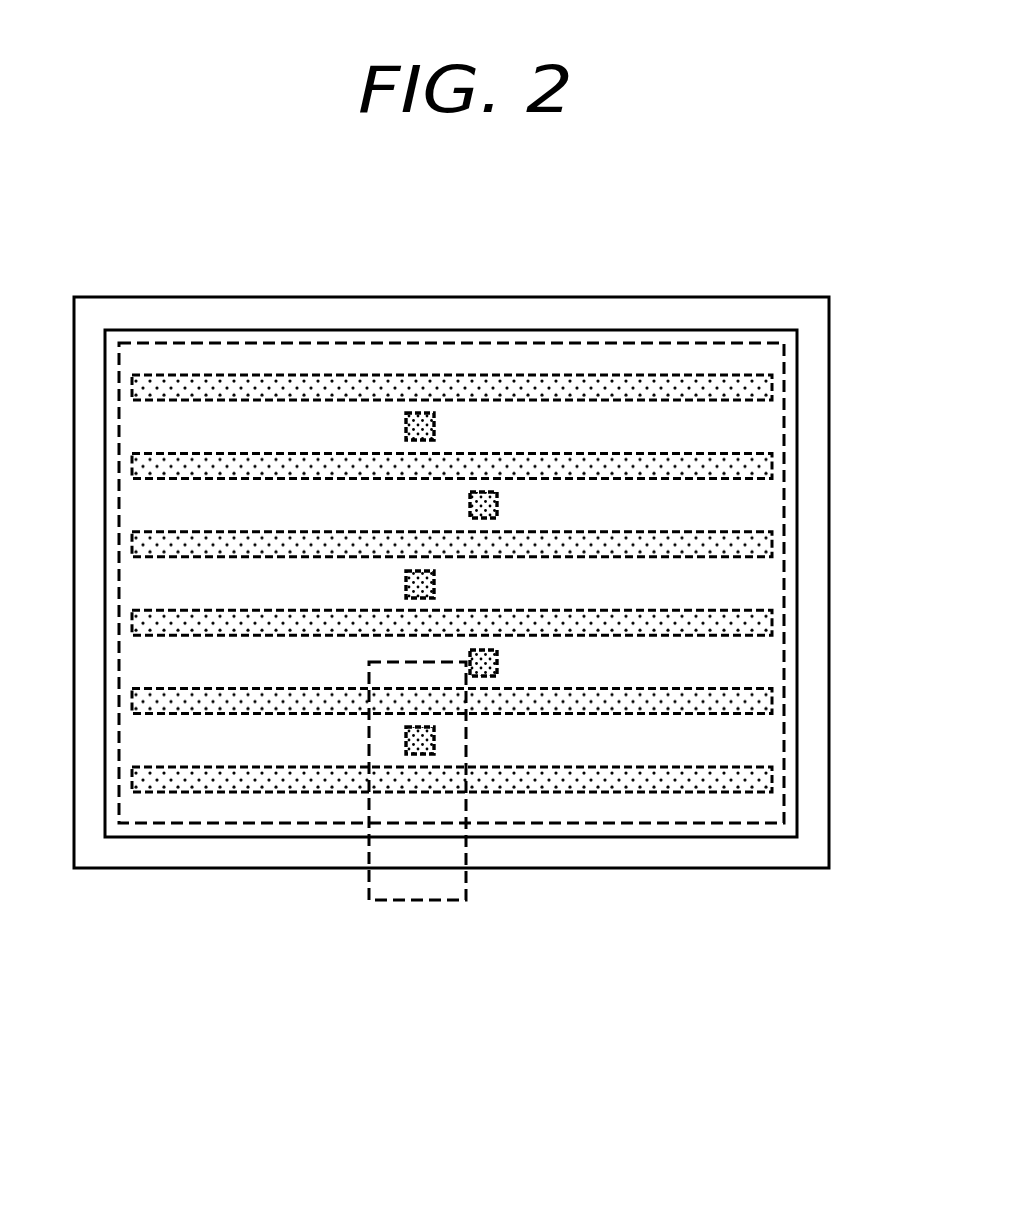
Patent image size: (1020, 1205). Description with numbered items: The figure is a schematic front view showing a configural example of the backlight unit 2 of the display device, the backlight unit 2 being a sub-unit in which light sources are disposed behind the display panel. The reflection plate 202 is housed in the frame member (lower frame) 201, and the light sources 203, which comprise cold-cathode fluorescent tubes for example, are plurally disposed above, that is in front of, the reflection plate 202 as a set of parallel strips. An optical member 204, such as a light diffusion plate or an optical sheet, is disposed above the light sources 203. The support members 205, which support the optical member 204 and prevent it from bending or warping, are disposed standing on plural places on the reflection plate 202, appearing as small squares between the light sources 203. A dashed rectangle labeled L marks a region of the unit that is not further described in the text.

The backlight unit 2 is at (832, 333).
The frame member (lower frame) 201 is at (115, 854).
The reflection plate 202 is at (747, 830).
The light sources 203 is at (212, 380).
The optical member 204 is at (699, 329).
The support members 205 is at (421, 413).
The region L is at (405, 902).